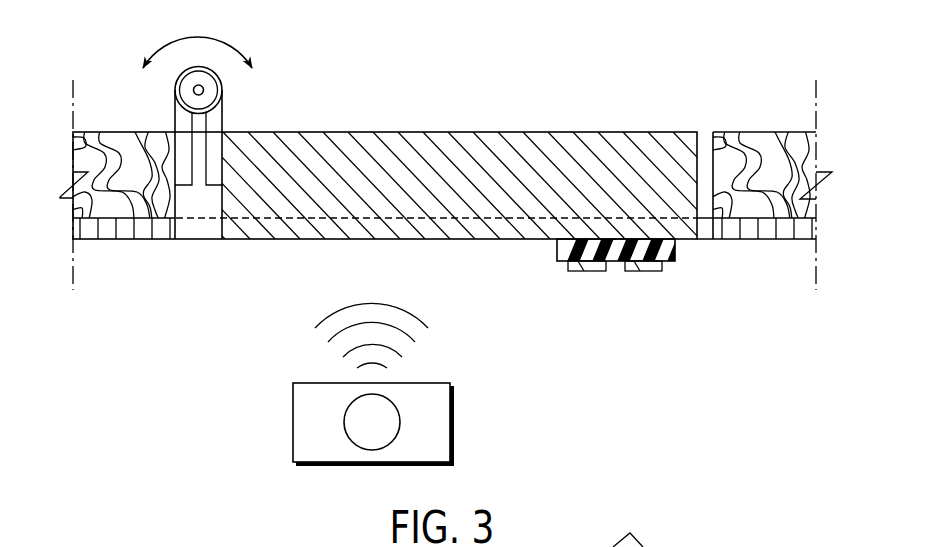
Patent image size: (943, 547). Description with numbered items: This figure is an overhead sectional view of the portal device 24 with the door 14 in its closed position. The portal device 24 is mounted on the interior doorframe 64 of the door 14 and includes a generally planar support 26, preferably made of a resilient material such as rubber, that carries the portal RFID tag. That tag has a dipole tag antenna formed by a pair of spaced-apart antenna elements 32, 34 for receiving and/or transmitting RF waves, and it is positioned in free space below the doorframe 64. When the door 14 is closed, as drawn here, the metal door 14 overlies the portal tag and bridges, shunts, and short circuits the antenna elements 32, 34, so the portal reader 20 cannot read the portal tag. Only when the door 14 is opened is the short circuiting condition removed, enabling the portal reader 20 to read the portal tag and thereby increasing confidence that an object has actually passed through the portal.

The door 14 is at (462, 145).
The doorframe 64 is at (198, 231).
The support 26 is at (557, 249).
The antenna element 32 is at (586, 272).
The antenna element 34 is at (643, 272).
The portal device 24 is at (680, 276).
The portal reader 20 is at (293, 420).